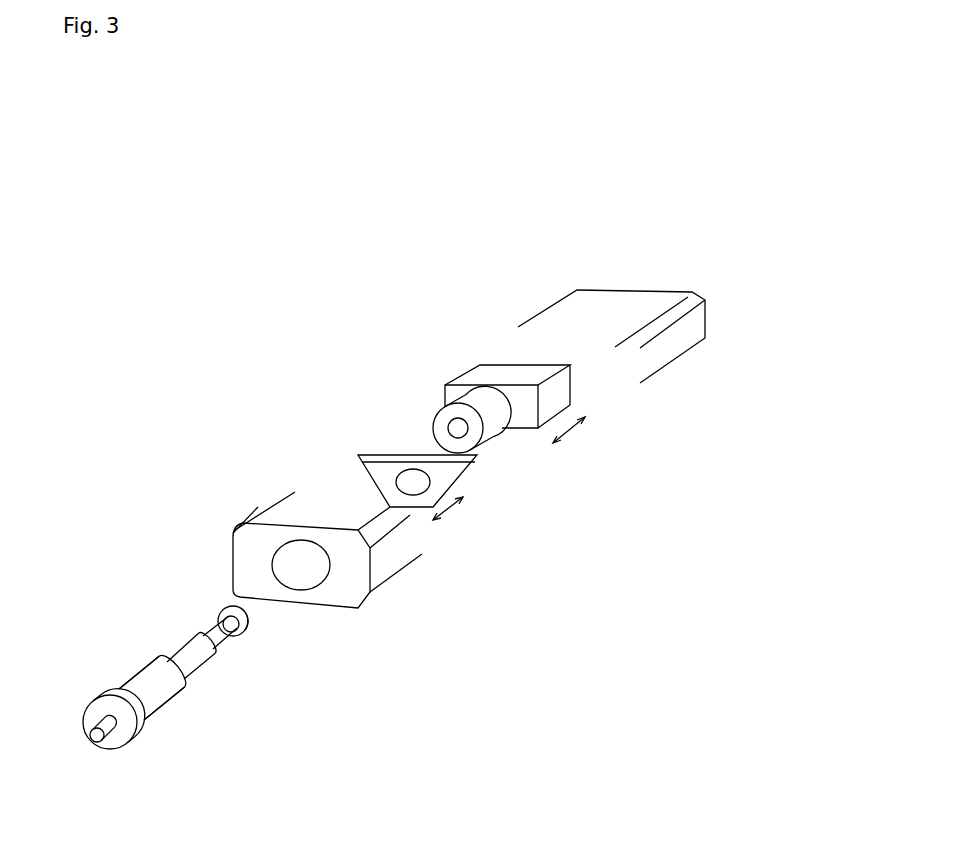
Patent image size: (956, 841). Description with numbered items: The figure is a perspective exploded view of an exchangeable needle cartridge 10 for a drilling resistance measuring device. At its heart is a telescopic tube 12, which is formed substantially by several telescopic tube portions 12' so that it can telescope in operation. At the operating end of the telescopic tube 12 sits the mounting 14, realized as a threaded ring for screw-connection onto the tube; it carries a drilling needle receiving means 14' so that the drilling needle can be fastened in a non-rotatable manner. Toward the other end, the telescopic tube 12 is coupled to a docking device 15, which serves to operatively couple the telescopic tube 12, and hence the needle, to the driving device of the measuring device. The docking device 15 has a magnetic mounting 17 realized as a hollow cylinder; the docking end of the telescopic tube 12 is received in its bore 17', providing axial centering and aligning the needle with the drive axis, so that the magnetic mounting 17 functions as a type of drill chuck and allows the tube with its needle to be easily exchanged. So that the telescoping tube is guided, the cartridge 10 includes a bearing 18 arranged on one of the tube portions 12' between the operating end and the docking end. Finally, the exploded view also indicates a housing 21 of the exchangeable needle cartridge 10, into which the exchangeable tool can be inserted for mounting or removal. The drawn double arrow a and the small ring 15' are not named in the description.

The exchangeable needle cartridge 10 is at (578, 288).
The housing 21 is at (675, 347).
The docking device 15 is at (506, 366).
The magnetic mounting 17 is at (488, 436).
The bore 17' is at (432, 415).
The direction of movement a is at (582, 438).
The bearing 18 is at (368, 453).
The telescopic tube 12 is at (270, 606).
The telescopic tube portions 12' is at (169, 703).
The mounting 14 is at (105, 694).
The drilling needle receiving means 14' is at (70, 726).
The bearing ring 15' is at (257, 647).